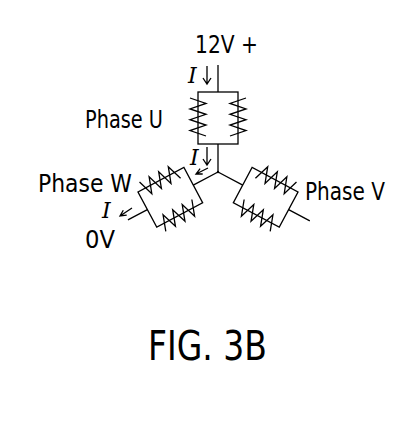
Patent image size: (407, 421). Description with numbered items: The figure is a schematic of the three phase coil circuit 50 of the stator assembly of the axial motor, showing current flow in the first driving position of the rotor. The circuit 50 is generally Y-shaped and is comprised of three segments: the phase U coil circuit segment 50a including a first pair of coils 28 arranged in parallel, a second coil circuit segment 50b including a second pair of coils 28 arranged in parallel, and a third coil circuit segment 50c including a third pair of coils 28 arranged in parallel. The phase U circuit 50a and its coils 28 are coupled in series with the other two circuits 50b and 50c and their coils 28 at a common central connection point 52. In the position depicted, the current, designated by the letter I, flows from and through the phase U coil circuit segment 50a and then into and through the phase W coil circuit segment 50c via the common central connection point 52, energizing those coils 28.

The coils 28 is at (192, 98).
The three phase coil circuit 50 is at (246, 160).
The phase U coil circuit segment 50a is at (218, 83).
The phase V coil circuit segment 50b is at (290, 218).
The phase W coil circuit segment 50c is at (136, 220).
The common connection point 52 is at (218, 176).